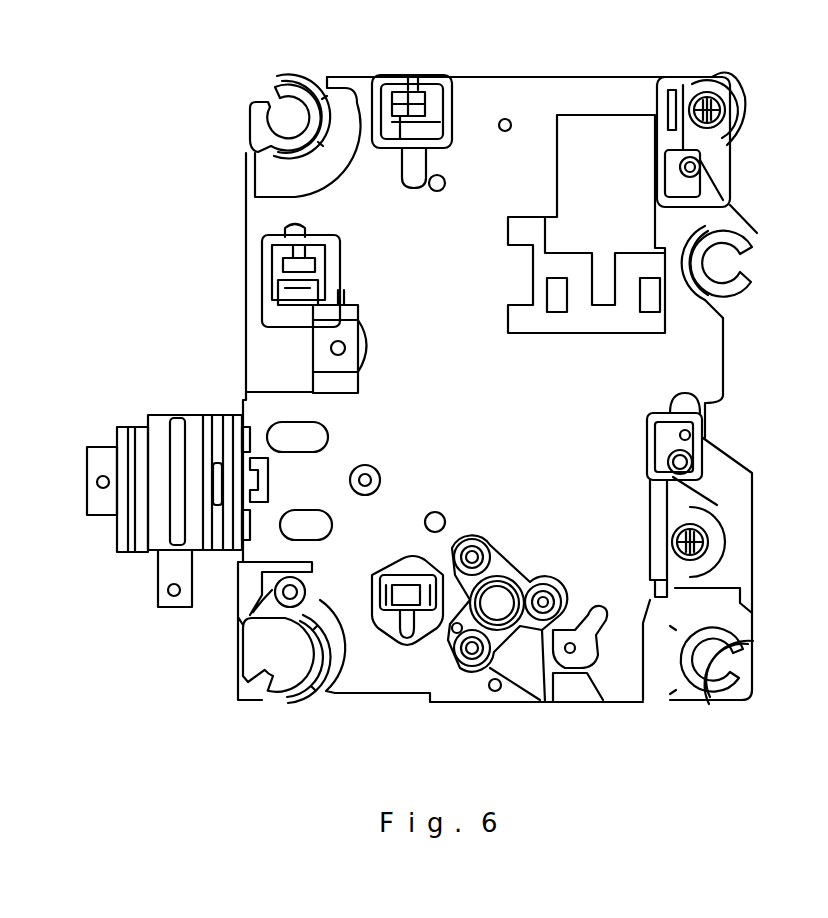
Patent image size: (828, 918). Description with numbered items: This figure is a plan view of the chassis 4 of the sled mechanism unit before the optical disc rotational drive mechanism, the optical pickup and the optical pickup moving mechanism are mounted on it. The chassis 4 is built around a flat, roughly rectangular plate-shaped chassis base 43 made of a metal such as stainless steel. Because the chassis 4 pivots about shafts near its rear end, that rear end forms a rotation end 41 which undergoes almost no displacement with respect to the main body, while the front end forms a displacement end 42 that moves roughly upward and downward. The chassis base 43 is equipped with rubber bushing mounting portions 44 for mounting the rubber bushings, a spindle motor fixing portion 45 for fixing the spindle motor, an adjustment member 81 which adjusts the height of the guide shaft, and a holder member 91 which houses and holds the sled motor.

The chassis 4 is at (536, 64).
The rotation end 41 is at (492, 77).
The displacement end 42 is at (452, 700).
The chassis base 43 is at (536, 168).
The rubber bushing mounting portions 44 is at (256, 122).
The spindle motor fixing portion 45 is at (550, 685).
The adjustment member 81 is at (750, 93).
The holder member 91 is at (160, 450).